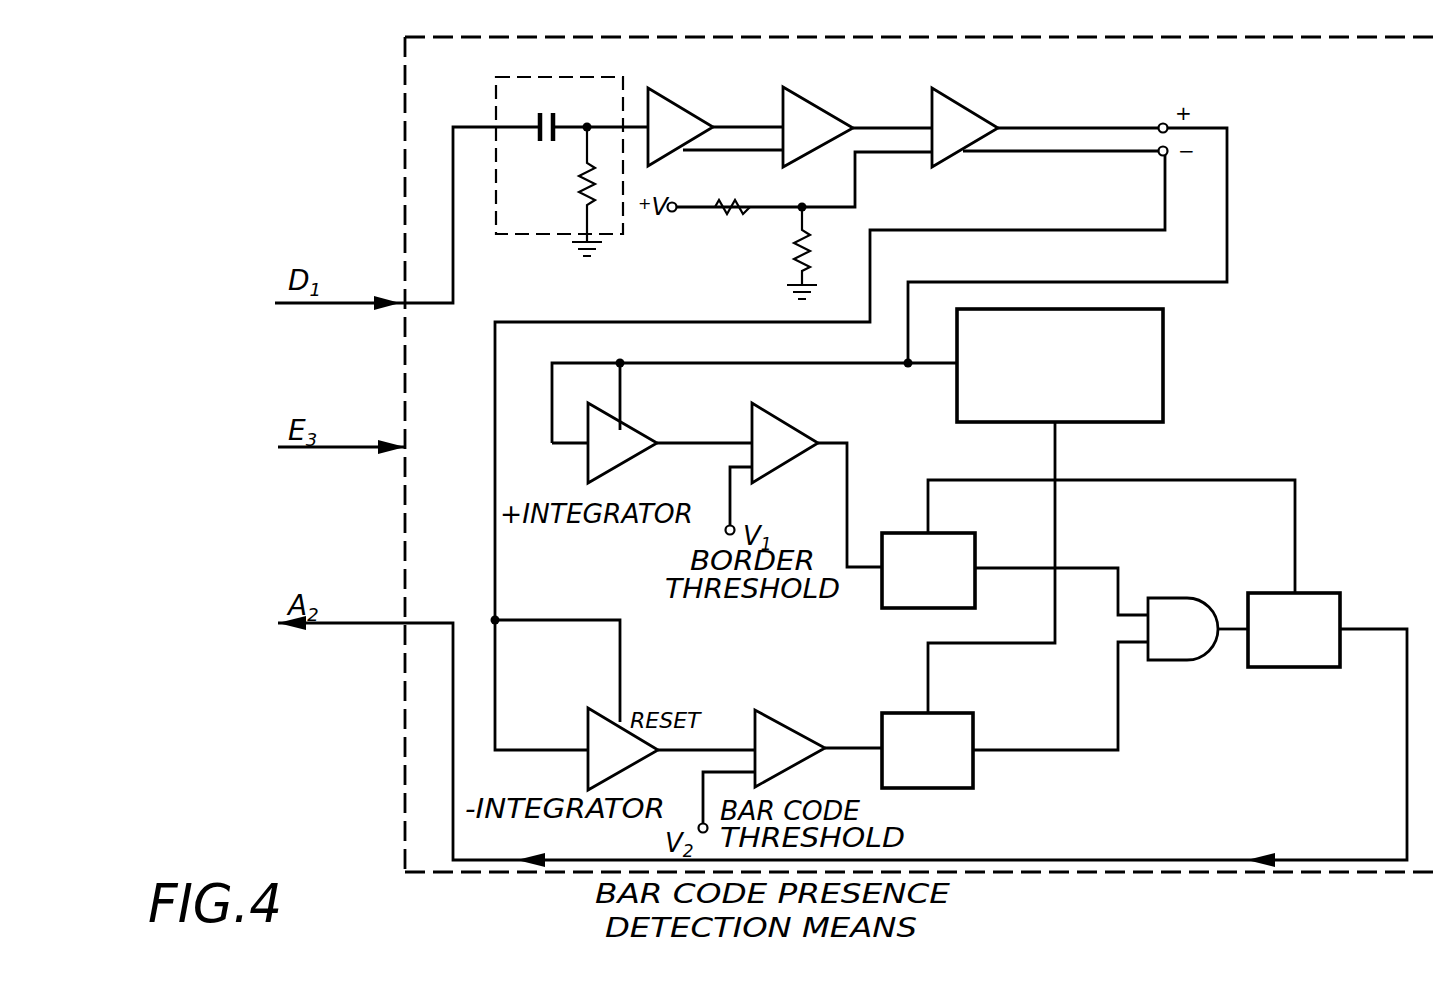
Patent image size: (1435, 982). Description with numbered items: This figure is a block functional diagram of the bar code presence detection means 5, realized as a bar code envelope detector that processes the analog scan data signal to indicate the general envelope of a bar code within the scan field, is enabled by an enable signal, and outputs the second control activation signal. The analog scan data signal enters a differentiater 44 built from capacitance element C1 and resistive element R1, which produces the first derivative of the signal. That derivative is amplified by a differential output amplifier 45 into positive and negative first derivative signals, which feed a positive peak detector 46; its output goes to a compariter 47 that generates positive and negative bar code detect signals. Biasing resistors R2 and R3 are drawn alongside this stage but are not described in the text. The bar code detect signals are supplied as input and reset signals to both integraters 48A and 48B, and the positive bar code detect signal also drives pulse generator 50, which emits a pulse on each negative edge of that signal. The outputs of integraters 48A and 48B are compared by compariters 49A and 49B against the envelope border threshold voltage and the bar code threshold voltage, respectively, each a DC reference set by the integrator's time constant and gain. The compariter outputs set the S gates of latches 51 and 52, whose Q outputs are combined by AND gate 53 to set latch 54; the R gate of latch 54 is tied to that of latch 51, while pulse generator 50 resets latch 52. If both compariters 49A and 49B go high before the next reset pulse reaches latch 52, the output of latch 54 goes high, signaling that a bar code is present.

The bar code presence detection means 5 is at (1030, 873).
The differentiater 44 is at (566, 148).
The differential output amplifier 45 is at (688, 110).
The positive peak detector 46 is at (826, 108).
The compariter 47 is at (972, 110).
The integrater 48A is at (632, 430).
The integrater 48B is at (630, 766).
The compariter 49A is at (808, 406).
The compariter 49B is at (797, 730).
The pulse generator 50 is at (1163, 367).
The latch 51 is at (957, 534).
The latch 52 is at (975, 722).
The AND gate 53 is at (1185, 598).
The latch 54 is at (1298, 668).
The capacitance element C1 is at (550, 111).
The resistive element R1 is at (572, 191).
The resistor R2 is at (733, 193).
The resistor R3 is at (817, 253).